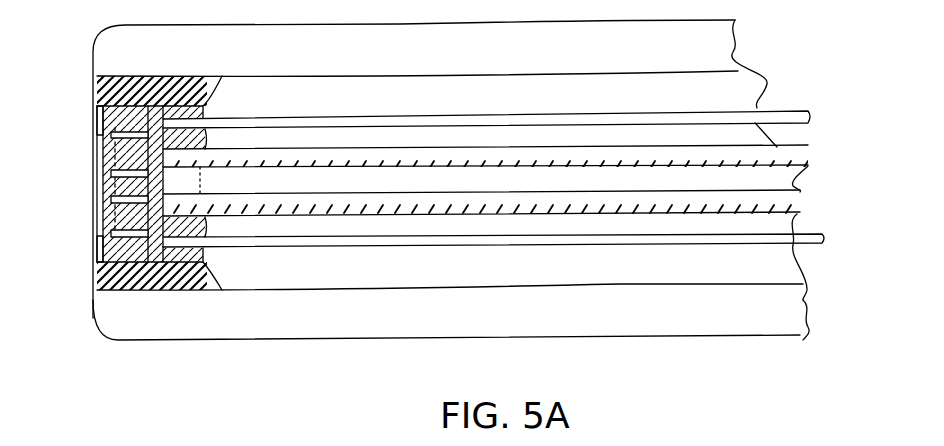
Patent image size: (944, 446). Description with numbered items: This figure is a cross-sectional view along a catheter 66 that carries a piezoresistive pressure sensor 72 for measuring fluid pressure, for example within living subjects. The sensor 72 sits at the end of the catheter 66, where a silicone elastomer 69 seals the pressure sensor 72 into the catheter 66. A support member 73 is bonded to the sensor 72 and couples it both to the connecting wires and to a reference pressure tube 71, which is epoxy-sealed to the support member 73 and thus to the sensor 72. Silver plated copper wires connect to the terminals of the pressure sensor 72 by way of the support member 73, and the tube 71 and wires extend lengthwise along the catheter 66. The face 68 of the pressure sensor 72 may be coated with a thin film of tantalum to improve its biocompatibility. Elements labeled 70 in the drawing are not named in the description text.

The catheter 66 is at (363, 33).
The face of the pressure sensor 68 is at (95, 165).
The silicone elastomer 69 is at (166, 276).
The rods 70 is at (617, 122).
The reference pressure tube 71 is at (743, 203).
The piezoresistive pressure sensor 72 is at (100, 112).
The support member 73 is at (95, 255).